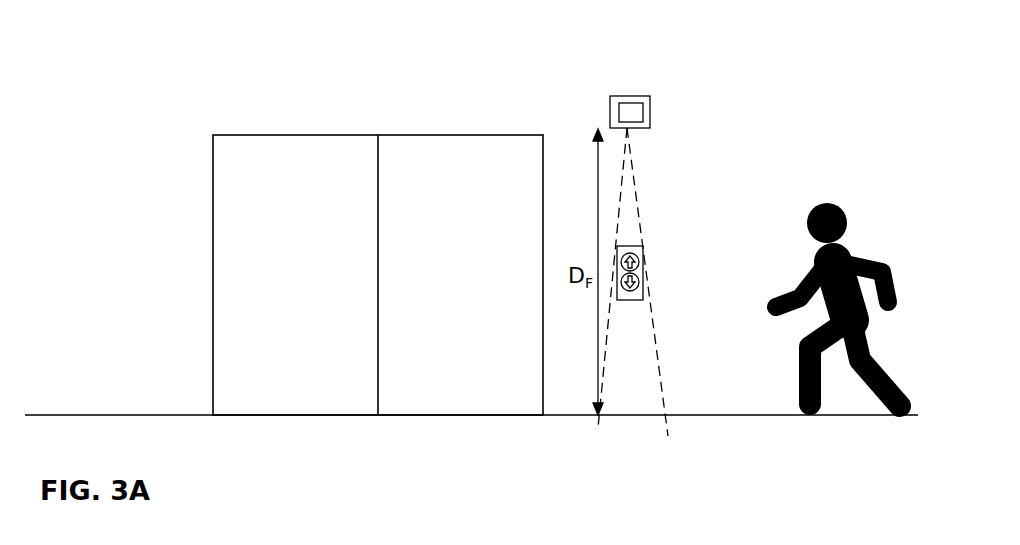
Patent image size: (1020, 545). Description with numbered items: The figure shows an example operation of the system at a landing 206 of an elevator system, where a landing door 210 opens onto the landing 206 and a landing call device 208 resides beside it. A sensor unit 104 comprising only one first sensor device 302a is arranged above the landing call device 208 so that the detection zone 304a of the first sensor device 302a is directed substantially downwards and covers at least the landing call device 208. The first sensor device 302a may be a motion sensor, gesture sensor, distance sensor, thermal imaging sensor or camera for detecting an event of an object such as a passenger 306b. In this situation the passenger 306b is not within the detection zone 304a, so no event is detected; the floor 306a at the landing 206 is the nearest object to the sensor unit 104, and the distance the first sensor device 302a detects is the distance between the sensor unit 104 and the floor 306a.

The landing 206 is at (90, 134).
The landing door 210 is at (213, 247).
The sensor unit 104 is at (622, 96).
The first sensor device 302a is at (643, 112).
The detection zone 304a is at (655, 347).
The landing call device 208 is at (642, 247).
The floor 306a is at (637, 433).
The passenger 306b is at (847, 250).